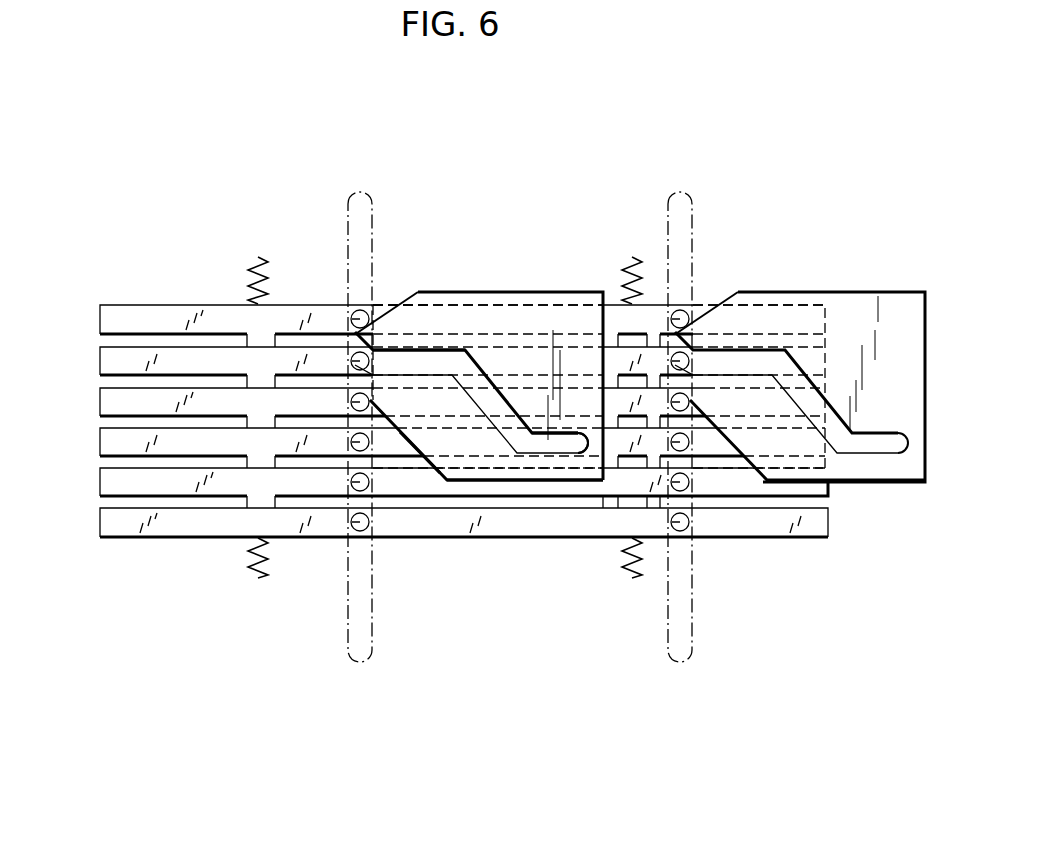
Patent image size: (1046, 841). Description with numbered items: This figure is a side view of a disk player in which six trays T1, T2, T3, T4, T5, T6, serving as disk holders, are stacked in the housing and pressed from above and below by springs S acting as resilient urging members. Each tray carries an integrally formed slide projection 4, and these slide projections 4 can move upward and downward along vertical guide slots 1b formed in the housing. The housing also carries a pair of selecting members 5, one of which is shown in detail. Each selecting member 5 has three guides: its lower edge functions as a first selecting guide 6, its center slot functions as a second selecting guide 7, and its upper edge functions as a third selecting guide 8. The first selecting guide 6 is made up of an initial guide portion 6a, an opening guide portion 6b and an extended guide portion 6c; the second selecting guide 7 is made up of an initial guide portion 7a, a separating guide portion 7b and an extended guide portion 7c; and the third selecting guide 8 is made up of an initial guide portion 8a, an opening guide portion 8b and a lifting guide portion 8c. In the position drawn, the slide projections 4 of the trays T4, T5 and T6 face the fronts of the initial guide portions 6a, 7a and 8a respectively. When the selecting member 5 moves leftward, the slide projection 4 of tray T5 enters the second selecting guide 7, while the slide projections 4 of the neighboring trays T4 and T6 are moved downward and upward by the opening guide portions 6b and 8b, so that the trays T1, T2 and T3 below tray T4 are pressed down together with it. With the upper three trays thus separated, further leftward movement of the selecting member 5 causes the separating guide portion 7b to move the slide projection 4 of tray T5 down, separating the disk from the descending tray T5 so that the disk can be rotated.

The tray T1 is at (100, 518).
The tray T2 is at (100, 478).
The tray T3 is at (100, 438).
The tray T4 is at (100, 398).
The tray T5 is at (100, 358).
The tray T6 is at (100, 318).
The spring S is at (258, 257).
The guide slot 1b is at (364, 664).
The slide projection 4 is at (352, 400).
The selecting member 5 is at (603, 292).
The first selecting guide 6 is at (412, 452).
The initial guide portion 6a is at (393, 425).
The opening guide portion 6b is at (431, 471).
The extended guide portion 6c is at (506, 482).
The second selecting guide 7 is at (488, 361).
The initial guide portion 7a is at (432, 349).
The separating guide portion 7b is at (531, 431).
The extended guide portion 7c is at (566, 432).
The third selecting guide 8 is at (478, 293).
The initial guide portion 8a is at (388, 302).
The opening guide portion 8b is at (404, 296).
The lifting guide portion 8c is at (548, 432).